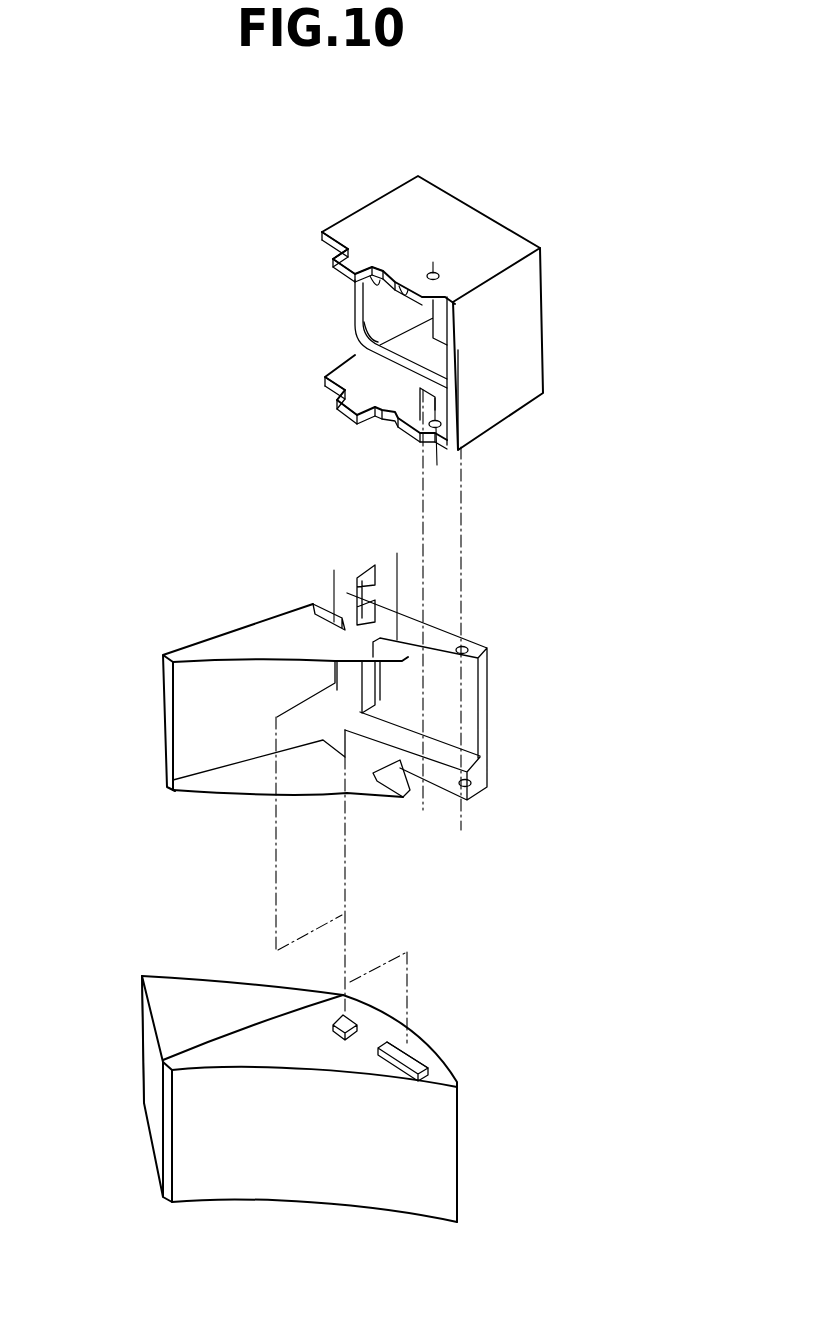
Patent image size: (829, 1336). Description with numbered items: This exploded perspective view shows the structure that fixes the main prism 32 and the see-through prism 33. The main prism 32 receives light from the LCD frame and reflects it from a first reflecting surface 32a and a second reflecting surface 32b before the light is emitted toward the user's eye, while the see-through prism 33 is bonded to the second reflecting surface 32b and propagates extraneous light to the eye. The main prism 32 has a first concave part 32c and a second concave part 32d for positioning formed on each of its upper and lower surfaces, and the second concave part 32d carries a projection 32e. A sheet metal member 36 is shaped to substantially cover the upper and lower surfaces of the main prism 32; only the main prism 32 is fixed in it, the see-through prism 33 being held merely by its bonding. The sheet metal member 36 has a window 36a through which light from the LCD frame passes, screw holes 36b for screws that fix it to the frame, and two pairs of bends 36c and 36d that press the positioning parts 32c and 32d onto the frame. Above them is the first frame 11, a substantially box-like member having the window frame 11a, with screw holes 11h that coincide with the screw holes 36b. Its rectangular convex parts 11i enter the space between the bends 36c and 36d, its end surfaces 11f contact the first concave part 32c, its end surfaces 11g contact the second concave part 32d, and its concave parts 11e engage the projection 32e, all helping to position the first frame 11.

The first frame 11 is at (508, 328).
The window frame 11a is at (365, 322).
The concave part 11e is at (368, 268).
The end surface 11f is at (325, 253).
The end surface 11g is at (398, 285).
The screw hole 11h is at (442, 274).
The rectangular convex part 11i is at (348, 265).
The sheet metal member 36 is at (190, 630).
The window 36a is at (457, 748).
The screw hole 36b is at (467, 645).
The bend 36c is at (322, 606).
The bend 36d is at (382, 600).
The main prism 32 is at (253, 1170).
The first reflecting surface 32a is at (350, 1162).
The second reflecting surface 32b is at (238, 1043).
The first concave part for positioning 32c is at (335, 1020).
The second concave part for positioning 32d is at (430, 1066).
The projection 32e is at (413, 1057).
The see-through prism 33 is at (145, 1068).